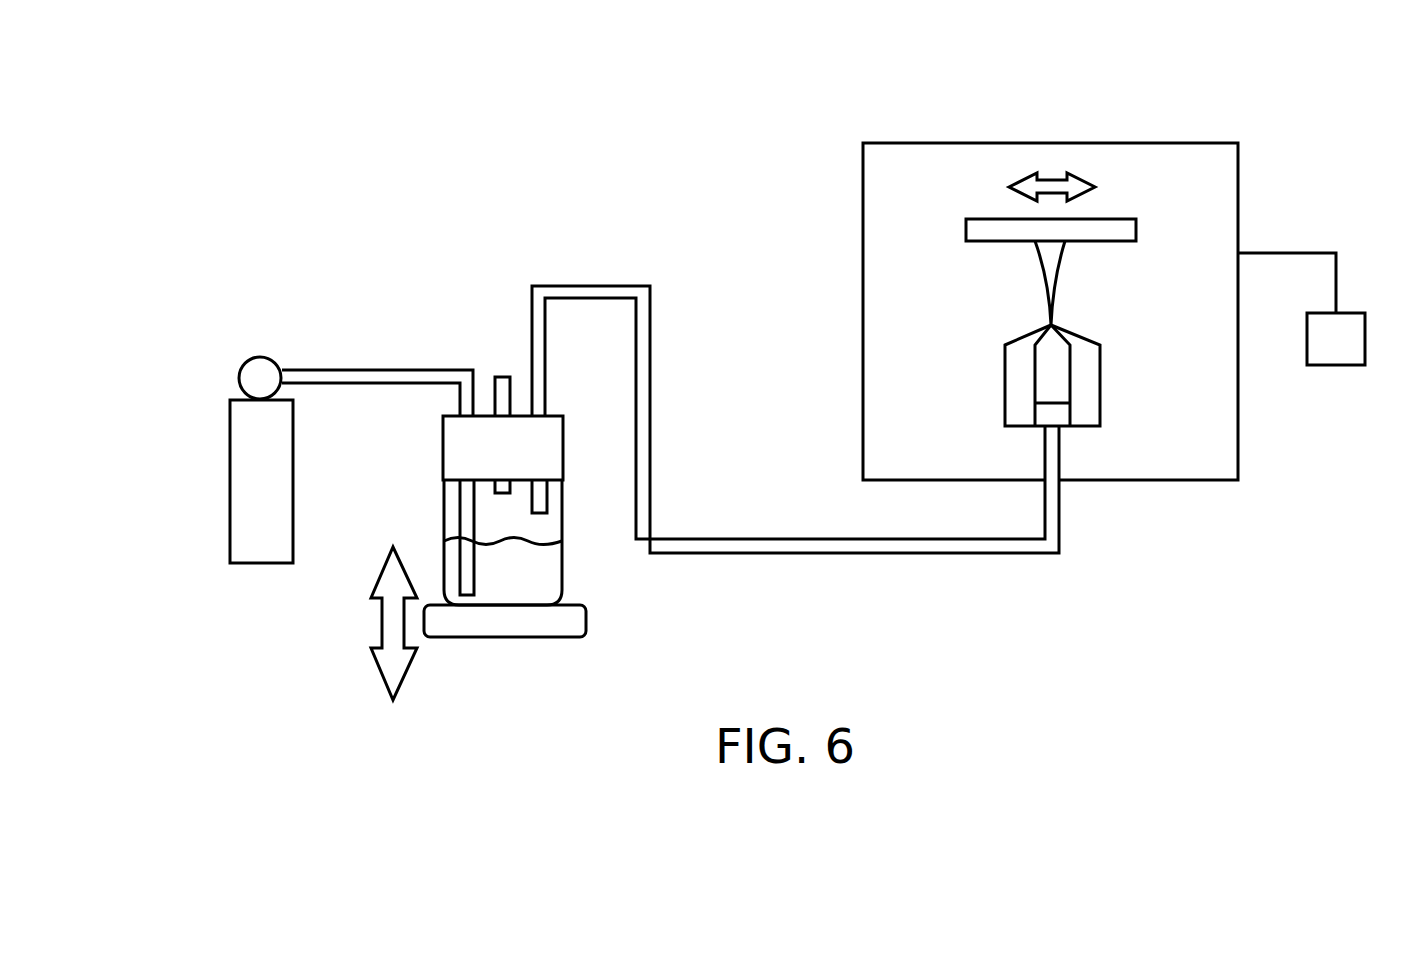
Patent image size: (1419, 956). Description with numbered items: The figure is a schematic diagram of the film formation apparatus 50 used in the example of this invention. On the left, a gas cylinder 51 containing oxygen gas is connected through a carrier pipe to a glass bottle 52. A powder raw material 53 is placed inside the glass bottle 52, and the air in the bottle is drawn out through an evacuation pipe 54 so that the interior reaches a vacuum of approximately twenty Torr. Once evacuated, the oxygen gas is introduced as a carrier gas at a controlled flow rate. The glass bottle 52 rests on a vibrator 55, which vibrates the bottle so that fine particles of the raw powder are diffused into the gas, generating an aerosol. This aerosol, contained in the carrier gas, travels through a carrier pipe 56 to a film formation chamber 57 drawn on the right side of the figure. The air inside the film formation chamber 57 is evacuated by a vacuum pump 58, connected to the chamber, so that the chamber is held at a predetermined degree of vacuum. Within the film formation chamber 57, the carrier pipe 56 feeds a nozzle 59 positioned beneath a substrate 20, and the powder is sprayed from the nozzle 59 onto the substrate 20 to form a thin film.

The film formation apparatus 50 is at (746, 188).
The gas cylinder 51 is at (228, 437).
The glass bottle 52 is at (557, 510).
The powder raw material 53 is at (552, 580).
The evacuation pipe 54 is at (492, 388).
The vibrator 55 is at (537, 625).
The carrier pipe 56 is at (620, 285).
The film formation chamber 57 is at (1185, 141).
The vacuum pump 58 is at (1360, 313).
The nozzle 59 is at (1090, 396).
The substrate 20 is at (1118, 230).